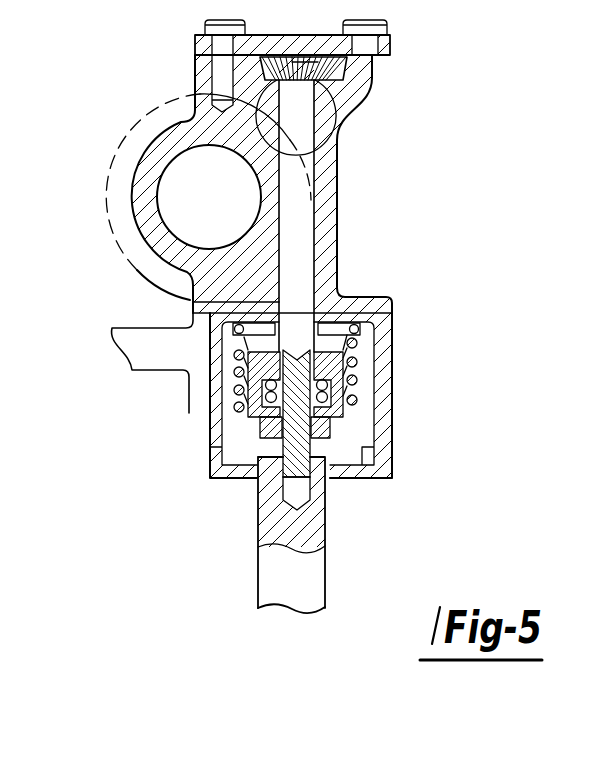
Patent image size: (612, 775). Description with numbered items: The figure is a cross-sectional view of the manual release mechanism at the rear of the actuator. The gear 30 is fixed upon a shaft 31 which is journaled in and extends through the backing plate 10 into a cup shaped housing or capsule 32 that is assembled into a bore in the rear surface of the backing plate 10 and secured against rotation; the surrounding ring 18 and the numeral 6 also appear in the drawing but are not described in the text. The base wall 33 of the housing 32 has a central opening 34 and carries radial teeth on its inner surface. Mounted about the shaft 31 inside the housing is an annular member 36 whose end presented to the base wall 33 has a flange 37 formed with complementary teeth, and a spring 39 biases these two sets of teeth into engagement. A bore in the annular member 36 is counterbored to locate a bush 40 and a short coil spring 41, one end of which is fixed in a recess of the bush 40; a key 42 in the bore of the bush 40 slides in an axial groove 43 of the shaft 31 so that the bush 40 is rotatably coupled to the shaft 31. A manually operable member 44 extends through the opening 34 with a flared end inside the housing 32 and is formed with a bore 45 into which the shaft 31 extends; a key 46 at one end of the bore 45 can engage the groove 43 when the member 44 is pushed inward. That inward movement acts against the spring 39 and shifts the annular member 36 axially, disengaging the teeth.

The valve assembly 6 is at (355, 455).
The backing plate 10 is at (332, 168).
The ring 18 is at (150, 213).
The gear 30 is at (386, 58).
The shaft 31 is at (300, 273).
The cup shaped housing 32 is at (206, 413).
The base wall 33 is at (250, 470).
The central opening 34 is at (268, 483).
The annular member 36 is at (345, 381).
The flange 37 is at (262, 422).
The spring 39 is at (235, 378).
The bush 40 is at (340, 421).
The coil spring 41 is at (347, 343).
The key 42 is at (245, 440).
The axial groove 43 is at (240, 365).
The manually operable member 44 is at (305, 578).
The bore 45 is at (303, 486).
The key 46 is at (286, 505).